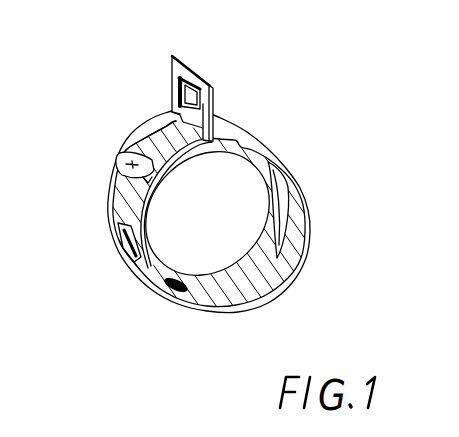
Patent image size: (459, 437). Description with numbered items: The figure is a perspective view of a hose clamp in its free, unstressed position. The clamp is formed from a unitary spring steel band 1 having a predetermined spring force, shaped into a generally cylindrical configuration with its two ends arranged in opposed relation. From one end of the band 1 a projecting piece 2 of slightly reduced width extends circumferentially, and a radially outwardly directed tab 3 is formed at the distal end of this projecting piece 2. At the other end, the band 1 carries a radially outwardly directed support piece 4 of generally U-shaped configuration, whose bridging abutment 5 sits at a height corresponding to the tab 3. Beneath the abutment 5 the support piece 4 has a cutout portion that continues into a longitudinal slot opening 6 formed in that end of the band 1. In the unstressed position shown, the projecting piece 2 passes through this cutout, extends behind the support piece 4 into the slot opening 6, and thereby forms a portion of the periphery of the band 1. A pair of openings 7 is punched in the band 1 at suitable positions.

The spring steel band 1 is at (255, 312).
The projecting piece 2 is at (154, 143).
The tab 3 is at (120, 160).
The support piece 4 is at (197, 73).
The bridging abutment 5 is at (174, 96).
The longitudinal slot opening 6 is at (143, 150).
The openings 7 is at (118, 240).